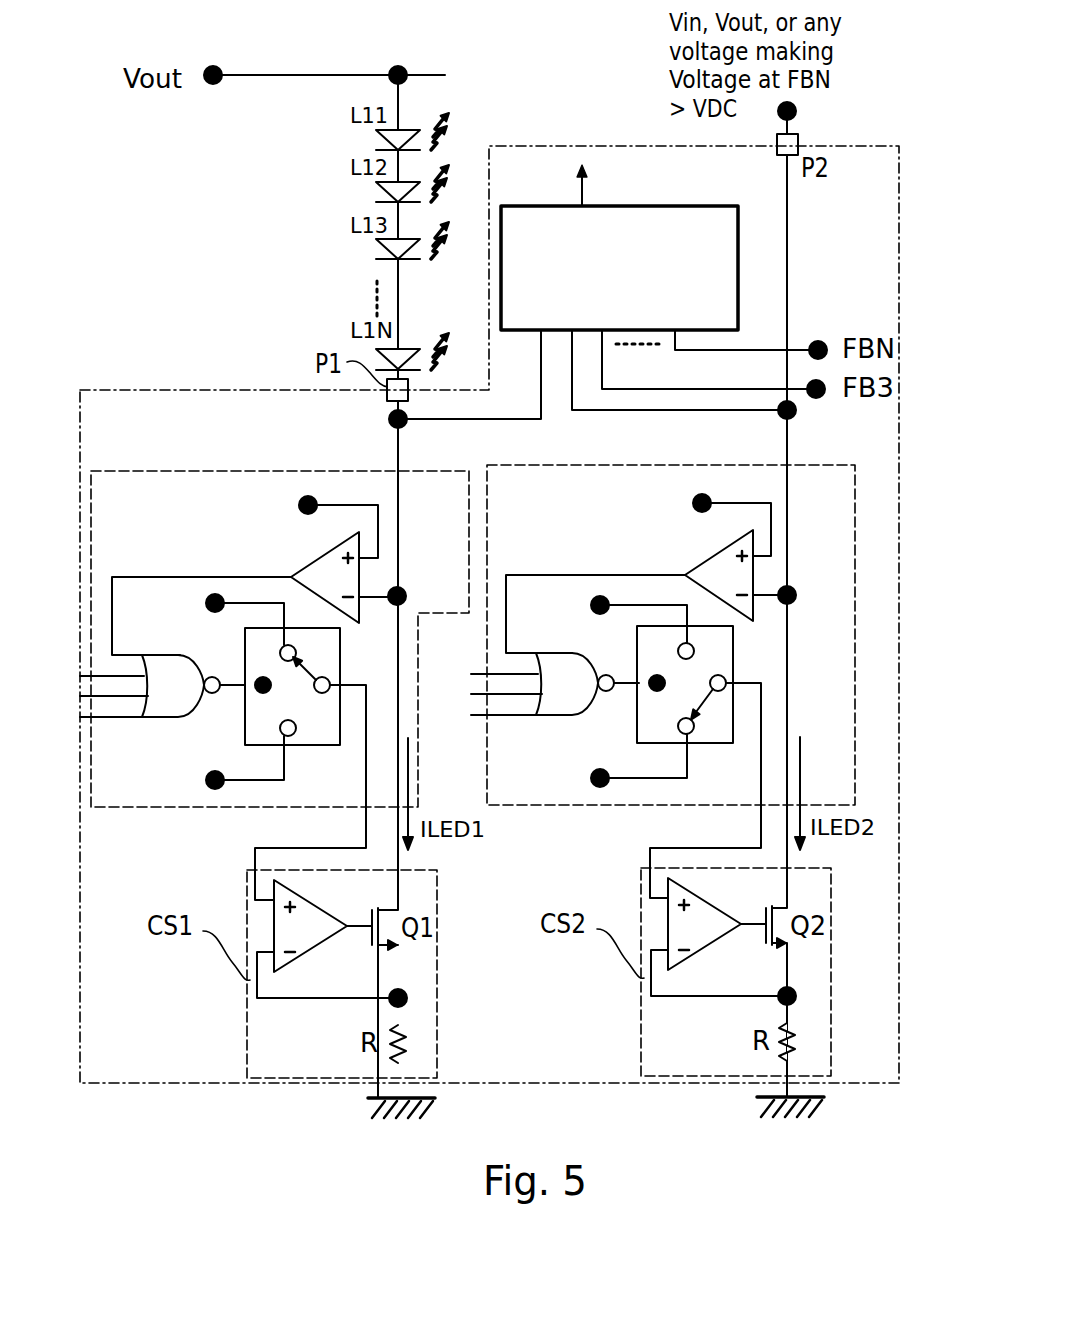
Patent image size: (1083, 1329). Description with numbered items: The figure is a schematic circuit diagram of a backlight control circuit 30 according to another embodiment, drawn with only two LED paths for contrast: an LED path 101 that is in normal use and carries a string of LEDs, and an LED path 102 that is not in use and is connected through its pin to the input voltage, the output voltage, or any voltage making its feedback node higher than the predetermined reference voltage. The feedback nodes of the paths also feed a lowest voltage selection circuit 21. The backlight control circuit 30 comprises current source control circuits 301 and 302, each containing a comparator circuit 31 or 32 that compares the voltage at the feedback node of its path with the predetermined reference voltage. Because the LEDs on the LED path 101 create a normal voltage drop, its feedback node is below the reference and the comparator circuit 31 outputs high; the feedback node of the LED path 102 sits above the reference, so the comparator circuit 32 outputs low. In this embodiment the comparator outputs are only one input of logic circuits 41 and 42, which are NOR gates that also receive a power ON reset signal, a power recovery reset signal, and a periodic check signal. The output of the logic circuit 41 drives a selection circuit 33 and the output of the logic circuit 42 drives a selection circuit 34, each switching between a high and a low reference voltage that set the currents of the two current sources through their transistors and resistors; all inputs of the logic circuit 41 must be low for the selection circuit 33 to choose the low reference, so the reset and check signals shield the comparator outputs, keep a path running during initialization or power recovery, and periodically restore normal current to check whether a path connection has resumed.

The lowest voltage selection circuit 21 is at (634, 316).
The backlight control circuit 30 is at (187, 1083).
The comparator circuit 31 is at (327, 555).
The comparator circuit 32 is at (720, 553).
The selection circuit 33 is at (246, 720).
The selection circuit 34 is at (636, 719).
The logic circuit 41 is at (182, 699).
The logic circuit 42 is at (576, 697).
The LED path 101 is at (398, 452).
The LED path 102 is at (787, 447).
The current source control circuit 301 is at (211, 471).
The current source control circuit 302 is at (558, 807).